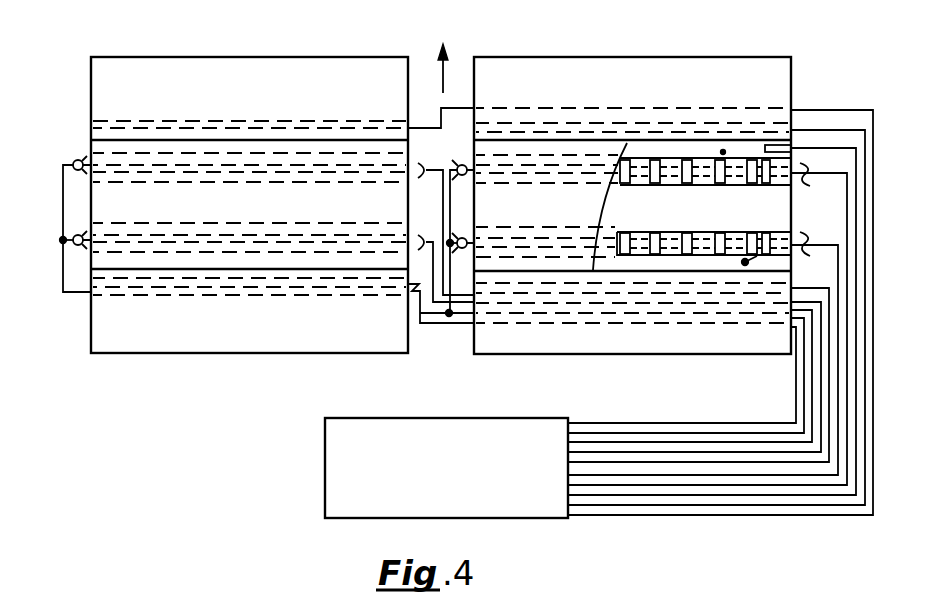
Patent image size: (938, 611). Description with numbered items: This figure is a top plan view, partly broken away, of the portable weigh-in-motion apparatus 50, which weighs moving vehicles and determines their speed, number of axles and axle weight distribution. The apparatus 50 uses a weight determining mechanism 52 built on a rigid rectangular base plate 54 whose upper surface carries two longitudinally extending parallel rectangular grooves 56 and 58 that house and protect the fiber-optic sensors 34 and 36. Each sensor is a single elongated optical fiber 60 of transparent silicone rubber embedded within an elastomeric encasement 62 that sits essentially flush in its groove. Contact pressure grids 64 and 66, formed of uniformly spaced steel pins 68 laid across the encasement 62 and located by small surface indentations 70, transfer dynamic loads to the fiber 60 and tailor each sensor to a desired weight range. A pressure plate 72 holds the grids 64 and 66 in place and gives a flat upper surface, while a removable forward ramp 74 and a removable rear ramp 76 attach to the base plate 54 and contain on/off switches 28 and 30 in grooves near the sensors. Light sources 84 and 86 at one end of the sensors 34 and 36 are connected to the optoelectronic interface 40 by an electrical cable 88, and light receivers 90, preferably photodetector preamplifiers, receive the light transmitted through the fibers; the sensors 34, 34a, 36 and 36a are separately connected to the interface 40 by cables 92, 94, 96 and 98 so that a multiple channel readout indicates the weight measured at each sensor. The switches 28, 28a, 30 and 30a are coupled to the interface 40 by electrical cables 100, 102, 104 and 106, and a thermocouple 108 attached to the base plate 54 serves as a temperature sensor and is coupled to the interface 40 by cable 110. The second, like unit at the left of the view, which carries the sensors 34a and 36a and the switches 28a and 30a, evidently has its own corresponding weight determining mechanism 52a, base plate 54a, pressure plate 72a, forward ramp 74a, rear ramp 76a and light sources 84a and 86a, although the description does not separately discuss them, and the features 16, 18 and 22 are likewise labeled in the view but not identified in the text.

The light beam / output arrow 16 is at (482, 90).
The optical fiber 18 is at (112, 113).
The fiber connection 22 is at (440, 72).
The on/off switch 28 is at (523, 289).
The on/off switch 28a is at (187, 287).
The on/off switch 30 is at (500, 127).
The on/off switch 30a is at (287, 126).
The fiber-optic sensor 34 is at (608, 208).
The fiber-optic sensor 34a is at (315, 240).
The fiber-optic sensor 36 is at (668, 187).
The fiber-optic sensor 36a is at (170, 175).
The optoelectronic interface 40 is at (325, 455).
The weigh-in-motion apparatus 50 is at (295, 362).
The weight determining mechanism 52 is at (552, 221).
The optical fiber bundle 52a is at (346, 211).
The base plate 54 is at (770, 212).
The optical fiber 54a is at (283, 260).
The groove 56 is at (617, 256).
The groove 58 is at (695, 160).
The optical fiber 60 is at (503, 167).
The elastomeric encasement 62 is at (643, 229).
The contact pressure grid 64 is at (745, 262).
The contact pressure grid 66 is at (723, 150).
The pins 68 is at (655, 160).
The surface indentations 70 is at (722, 187).
The pressure plate 72 is at (496, 263).
The optical fiber 72a is at (183, 143).
The forward ramp 74 is at (633, 340).
The substrate 74a is at (178, 337).
The rear ramp 76 is at (778, 72).
The sensor module 76a is at (252, 83).
The light source 84 is at (460, 238).
The light source 84a is at (80, 246).
The light source 86 is at (458, 165).
The light source 86a is at (84, 169).
The electrical cable 88 is at (740, 433).
The light receiver 90 is at (417, 172).
The cable 92 is at (623, 473).
The cable 94 is at (672, 442).
The cable 96 is at (588, 485).
The cable 98 is at (717, 452).
The electrical cable 100 is at (760, 463).
The electrical cable 102 is at (592, 423).
The electrical cable 104 is at (648, 505).
The electrical cable 106 is at (723, 515).
The thermocouple 108 is at (777, 145).
The cable 110 is at (792, 495).